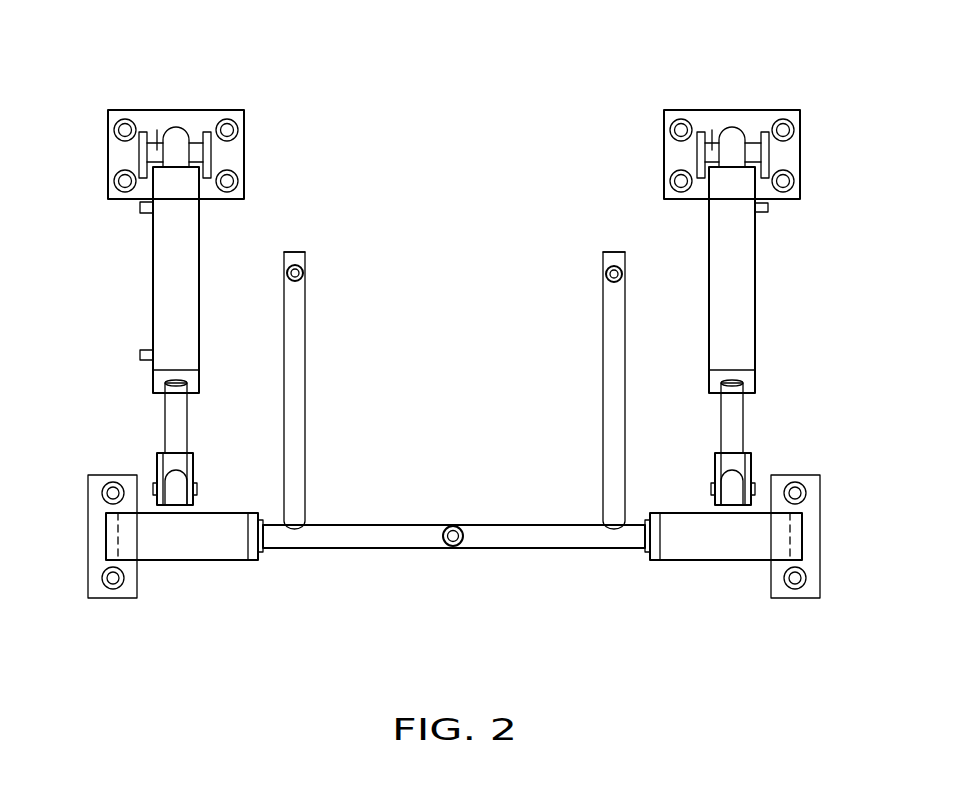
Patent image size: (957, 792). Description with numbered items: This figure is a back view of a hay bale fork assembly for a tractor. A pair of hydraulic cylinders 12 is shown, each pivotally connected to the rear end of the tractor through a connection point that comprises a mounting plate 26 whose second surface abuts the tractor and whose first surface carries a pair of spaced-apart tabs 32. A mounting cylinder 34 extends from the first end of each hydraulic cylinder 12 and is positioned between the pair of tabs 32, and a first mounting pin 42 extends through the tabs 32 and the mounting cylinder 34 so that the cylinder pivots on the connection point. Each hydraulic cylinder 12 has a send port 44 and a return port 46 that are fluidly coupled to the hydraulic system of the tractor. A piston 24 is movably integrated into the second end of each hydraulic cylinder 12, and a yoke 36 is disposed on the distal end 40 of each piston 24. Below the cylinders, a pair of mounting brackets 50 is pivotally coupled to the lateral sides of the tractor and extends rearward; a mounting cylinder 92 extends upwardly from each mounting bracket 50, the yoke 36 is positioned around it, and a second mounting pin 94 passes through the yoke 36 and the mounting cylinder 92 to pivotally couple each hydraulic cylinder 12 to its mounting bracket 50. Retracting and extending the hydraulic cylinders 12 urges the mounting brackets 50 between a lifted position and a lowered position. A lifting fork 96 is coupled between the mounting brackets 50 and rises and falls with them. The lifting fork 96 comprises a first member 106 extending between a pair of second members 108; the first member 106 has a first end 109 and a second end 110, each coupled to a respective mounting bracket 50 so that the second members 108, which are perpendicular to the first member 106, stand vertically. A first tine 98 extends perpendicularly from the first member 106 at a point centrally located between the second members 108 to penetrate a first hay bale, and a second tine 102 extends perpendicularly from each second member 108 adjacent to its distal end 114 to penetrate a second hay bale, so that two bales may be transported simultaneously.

The hydraulic cylinder 12 is at (153, 273).
The piston 24 is at (165, 422).
The mounting plate 26 is at (793, 110).
The tab 32 is at (700, 148).
The mounting cylinder 34 is at (170, 130).
The yoke 36 is at (157, 467).
The distal end 40 is at (735, 458).
The first mounting pin 42 is at (159, 148).
The send port 44 is at (140, 209).
The return port 46 is at (140, 355).
The mounting bracket 50 is at (183, 560).
The mounting cylinder 92 is at (176, 482).
The second mounting pin 94 is at (197, 490).
The lifting fork 96 is at (318, 268).
The first tine 98 is at (455, 525).
The second tine 102 is at (300, 280).
The first member 106 is at (425, 548).
The second member 108 is at (305, 390).
The first end 109 is at (264, 546).
The second end 110 is at (655, 540).
The distal end 114 is at (295, 252).